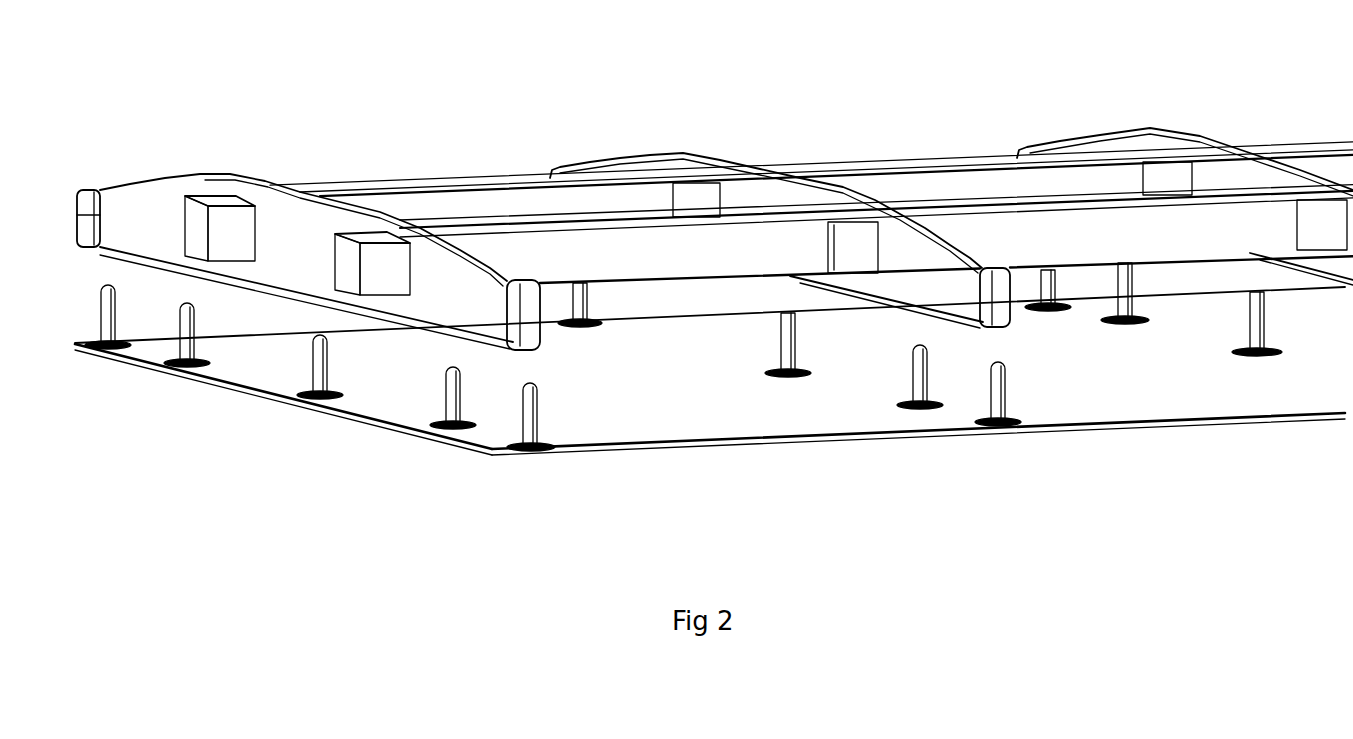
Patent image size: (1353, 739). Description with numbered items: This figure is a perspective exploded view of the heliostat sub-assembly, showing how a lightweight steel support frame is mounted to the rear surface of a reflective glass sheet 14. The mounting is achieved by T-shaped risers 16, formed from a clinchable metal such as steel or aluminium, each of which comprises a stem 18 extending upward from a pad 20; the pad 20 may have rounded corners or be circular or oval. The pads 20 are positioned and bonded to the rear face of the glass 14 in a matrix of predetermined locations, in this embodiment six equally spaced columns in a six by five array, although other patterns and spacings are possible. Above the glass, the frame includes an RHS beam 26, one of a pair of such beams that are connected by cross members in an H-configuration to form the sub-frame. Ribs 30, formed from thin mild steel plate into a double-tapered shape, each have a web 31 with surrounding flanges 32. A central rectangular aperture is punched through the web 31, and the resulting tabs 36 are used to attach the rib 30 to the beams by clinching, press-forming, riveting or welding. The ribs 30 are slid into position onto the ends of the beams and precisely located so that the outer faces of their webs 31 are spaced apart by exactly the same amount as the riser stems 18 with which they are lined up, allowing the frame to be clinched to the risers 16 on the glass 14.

The reflective glass sheet 14 is at (743, 407).
The T-shaped riser 16 is at (516, 421).
The stem 18 is at (533, 407).
The pad 20 is at (547, 455).
The RHS beam 26 is at (551, 216).
The rib 30 is at (1005, 300).
The web 31 is at (471, 312).
The flange 32 is at (514, 282).
The tab 36 is at (376, 273).